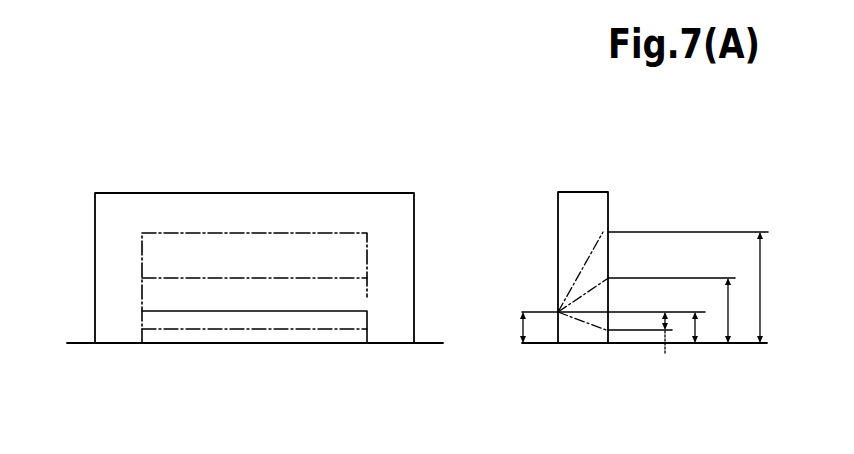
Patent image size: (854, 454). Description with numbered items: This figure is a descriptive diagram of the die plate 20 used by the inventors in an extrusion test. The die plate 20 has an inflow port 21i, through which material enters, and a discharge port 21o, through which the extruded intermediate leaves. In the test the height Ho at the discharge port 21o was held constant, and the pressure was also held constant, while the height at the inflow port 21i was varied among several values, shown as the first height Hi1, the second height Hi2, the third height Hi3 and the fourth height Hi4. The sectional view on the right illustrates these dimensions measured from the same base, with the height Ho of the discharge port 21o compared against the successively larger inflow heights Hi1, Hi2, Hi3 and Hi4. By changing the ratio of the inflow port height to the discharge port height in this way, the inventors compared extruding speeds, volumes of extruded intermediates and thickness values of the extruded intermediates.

The die plate 20 is at (358, 190).
The inflow port 21i is at (367, 297).
The discharge port 21o is at (311, 313).
The height at the discharge port Ho is at (523, 327).
The first height at the inflow port Hi1 is at (660, 337).
The second height at the inflow port Hi2 is at (693, 323).
The third height at the inflow port Hi3 is at (729, 295).
The fourth height at the inflow port Hi4 is at (762, 320).